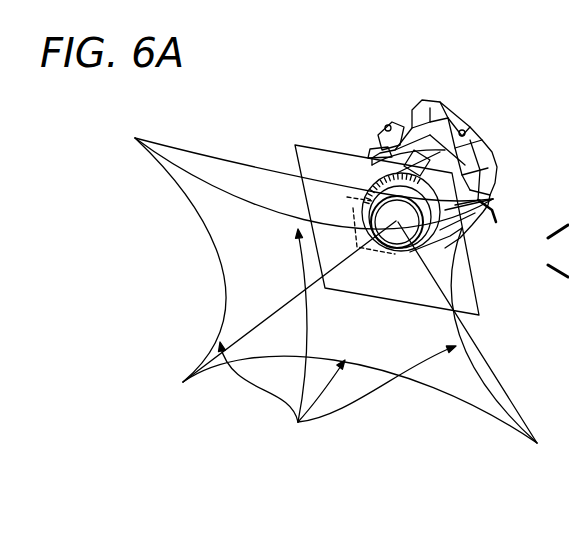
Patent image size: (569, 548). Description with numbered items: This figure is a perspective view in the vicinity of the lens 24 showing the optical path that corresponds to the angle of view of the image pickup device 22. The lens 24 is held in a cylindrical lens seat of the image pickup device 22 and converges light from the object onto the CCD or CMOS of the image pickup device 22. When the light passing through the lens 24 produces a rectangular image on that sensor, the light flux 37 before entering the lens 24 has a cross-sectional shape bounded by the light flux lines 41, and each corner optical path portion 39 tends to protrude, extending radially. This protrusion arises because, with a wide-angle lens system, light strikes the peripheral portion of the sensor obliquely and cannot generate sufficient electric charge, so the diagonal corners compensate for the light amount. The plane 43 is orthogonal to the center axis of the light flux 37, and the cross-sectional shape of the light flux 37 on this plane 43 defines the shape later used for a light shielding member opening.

The image pickup device 22 is at (487, 153).
The lens 24 is at (397, 221).
The light flux 37 is at (194, 152).
The corner optical path portion 39 is at (134, 139).
The light flux lines 41 is at (338, 339).
The plane 43 is at (308, 144).